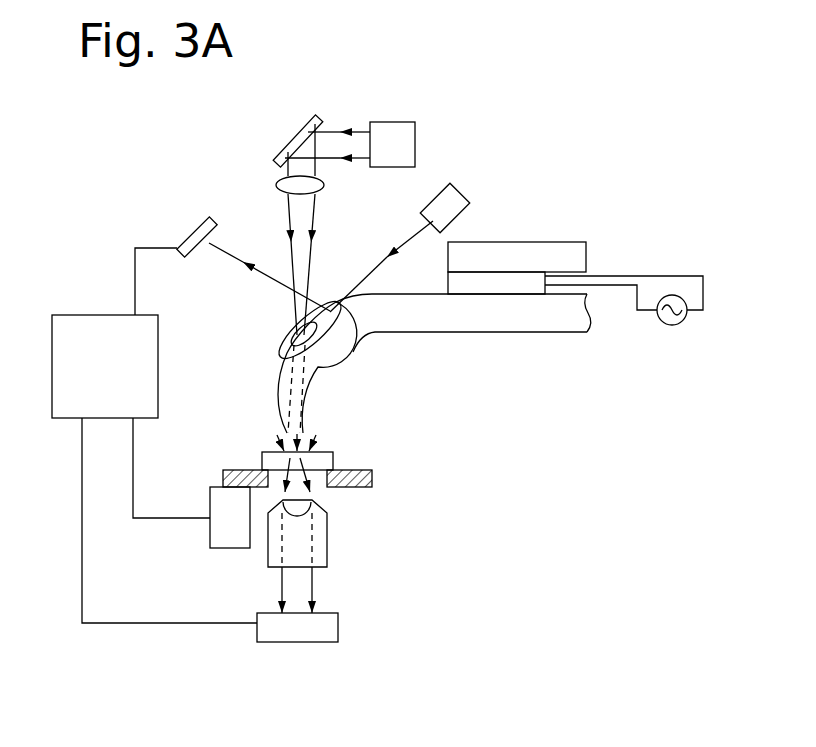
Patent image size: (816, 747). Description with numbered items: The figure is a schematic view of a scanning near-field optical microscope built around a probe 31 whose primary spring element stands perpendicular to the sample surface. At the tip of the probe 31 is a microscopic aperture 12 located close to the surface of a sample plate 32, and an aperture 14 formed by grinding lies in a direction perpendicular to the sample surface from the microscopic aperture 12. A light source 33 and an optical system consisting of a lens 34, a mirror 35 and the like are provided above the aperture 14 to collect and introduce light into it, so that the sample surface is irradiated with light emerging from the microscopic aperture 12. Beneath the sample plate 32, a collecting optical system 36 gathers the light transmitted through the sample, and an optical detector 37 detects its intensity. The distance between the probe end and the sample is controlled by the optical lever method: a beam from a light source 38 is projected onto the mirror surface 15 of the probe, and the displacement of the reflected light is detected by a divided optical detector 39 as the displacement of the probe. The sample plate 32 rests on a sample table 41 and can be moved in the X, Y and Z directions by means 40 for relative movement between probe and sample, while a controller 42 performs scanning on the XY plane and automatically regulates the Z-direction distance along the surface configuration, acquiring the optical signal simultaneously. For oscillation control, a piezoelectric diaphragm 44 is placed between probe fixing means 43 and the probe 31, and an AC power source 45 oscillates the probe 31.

The microscopic aperture 12 is at (303, 430).
The aperture 14 is at (333, 347).
The mirror surface 15 is at (357, 335).
The probe 31 is at (520, 320).
The sample plate 32 is at (333, 462).
The light source 33 is at (417, 138).
The lens 34 is at (283, 184).
The mirror 35 is at (287, 147).
The collecting optical system 36 is at (325, 535).
The optical detector 37 is at (323, 633).
The light source 38 is at (452, 202).
The divided optical detector 39 is at (187, 232).
The means for relative movement 40 is at (227, 512).
The sample table 41 is at (236, 470).
The controller 42 is at (88, 330).
The probe fixing means 43 is at (575, 257).
The piezoelectric diaphragm 44 is at (498, 283).
The AC power source 45 is at (682, 325).